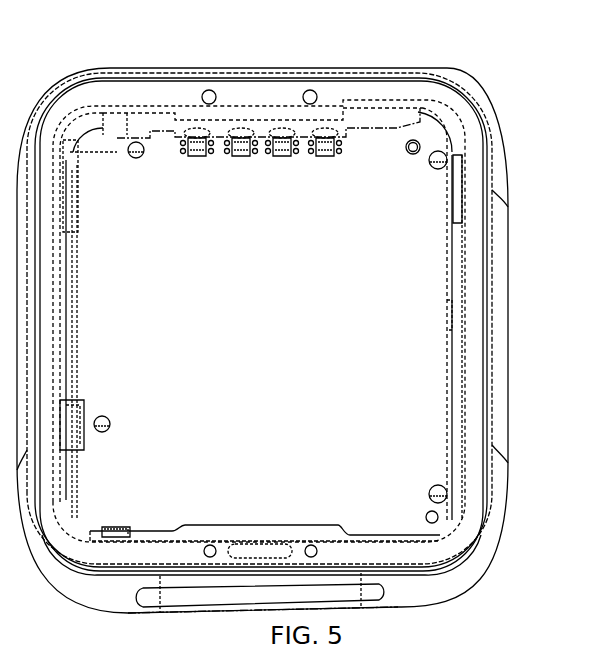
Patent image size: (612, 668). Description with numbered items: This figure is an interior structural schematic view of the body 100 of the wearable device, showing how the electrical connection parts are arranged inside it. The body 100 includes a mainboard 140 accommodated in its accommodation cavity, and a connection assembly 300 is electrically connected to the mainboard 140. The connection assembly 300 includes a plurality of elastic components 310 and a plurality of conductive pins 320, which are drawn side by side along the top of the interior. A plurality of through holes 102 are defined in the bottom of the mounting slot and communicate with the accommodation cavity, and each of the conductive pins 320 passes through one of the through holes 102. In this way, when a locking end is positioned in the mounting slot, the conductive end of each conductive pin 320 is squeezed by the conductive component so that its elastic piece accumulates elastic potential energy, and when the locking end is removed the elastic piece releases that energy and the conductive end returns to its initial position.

The body 100 is at (100, 96).
The through holes 102 is at (329, 110).
The mainboard 140 is at (424, 230).
The connection assembly 300 is at (193, 142).
The elastic components 310 is at (247, 137).
The conductive pins 320 is at (290, 130).